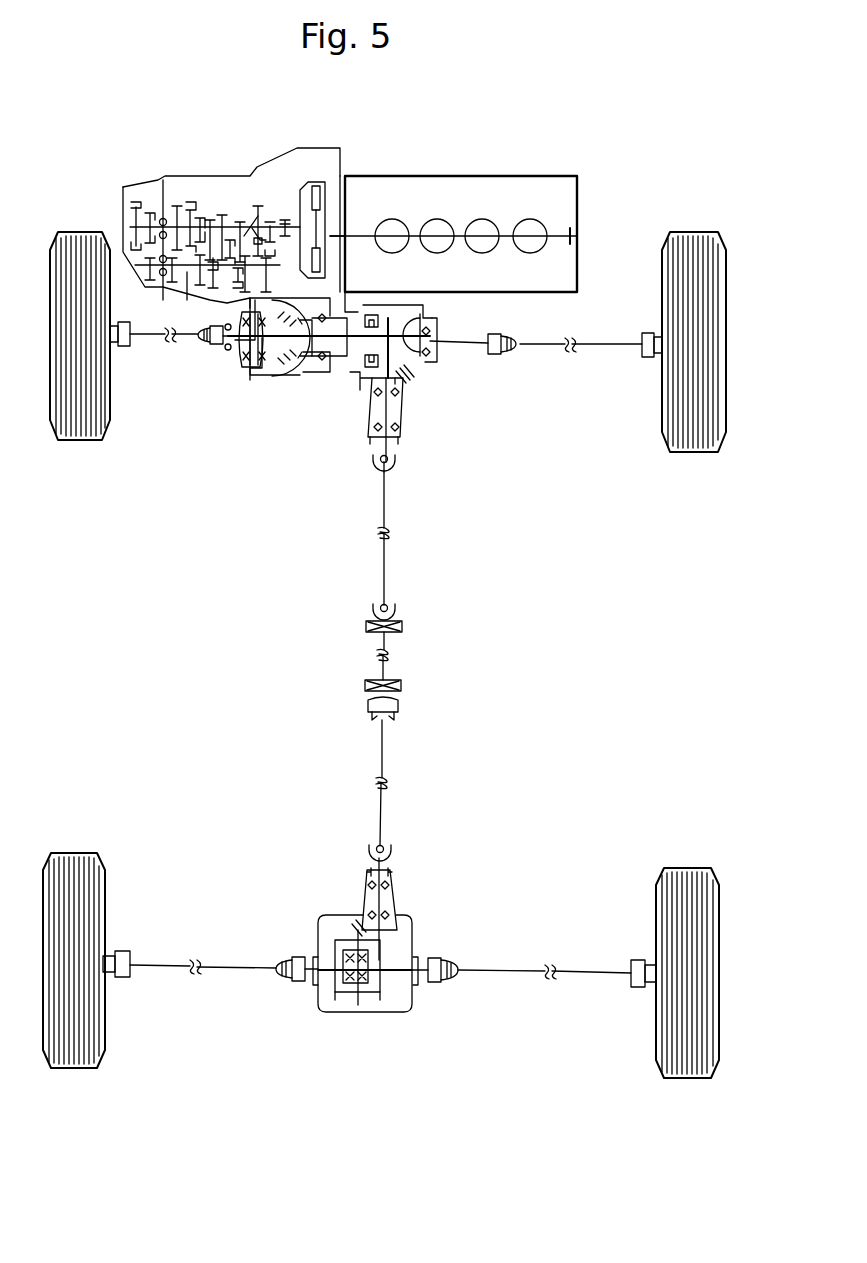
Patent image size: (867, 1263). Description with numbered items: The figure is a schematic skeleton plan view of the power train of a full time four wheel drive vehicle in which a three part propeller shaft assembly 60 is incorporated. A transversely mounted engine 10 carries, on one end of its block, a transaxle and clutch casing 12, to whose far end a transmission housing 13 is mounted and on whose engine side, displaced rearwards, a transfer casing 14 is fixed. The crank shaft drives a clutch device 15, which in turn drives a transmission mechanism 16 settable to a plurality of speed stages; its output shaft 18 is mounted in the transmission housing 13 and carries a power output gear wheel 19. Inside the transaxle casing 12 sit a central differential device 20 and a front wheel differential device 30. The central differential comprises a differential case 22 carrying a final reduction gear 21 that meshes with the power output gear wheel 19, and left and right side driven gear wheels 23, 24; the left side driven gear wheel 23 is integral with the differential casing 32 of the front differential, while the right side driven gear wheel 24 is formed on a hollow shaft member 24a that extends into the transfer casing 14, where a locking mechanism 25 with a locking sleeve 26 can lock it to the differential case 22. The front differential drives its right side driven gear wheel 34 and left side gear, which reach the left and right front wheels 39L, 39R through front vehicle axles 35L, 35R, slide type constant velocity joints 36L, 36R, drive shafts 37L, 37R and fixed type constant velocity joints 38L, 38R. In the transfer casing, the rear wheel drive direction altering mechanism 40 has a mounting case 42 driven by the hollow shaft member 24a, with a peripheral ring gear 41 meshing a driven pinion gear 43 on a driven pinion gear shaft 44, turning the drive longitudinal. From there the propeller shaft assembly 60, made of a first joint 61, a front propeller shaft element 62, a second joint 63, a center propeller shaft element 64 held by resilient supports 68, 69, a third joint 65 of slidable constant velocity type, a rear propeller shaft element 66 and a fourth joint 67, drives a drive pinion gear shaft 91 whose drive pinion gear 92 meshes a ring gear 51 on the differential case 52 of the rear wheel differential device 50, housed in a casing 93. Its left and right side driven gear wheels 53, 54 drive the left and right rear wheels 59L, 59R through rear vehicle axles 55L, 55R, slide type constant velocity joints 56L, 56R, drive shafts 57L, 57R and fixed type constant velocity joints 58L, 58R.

The engine 10 is at (498, 175).
The transaxle and clutch casing 12 is at (268, 170).
The transmission housing 13 is at (163, 180).
The transfer casing 14 is at (424, 305).
The clutch device 15 is at (318, 185).
The transmission mechanism 16 is at (205, 200).
The output shaft 18 is at (190, 272).
The power output gear wheel 19 is at (255, 236).
The central differential device 20 is at (308, 372).
The final reduction gear 21 is at (262, 400).
The differential case 22 is at (302, 380).
The left side driven gear wheel 23 is at (278, 356).
The right side driven gear wheel 24 is at (356, 372).
The hollow shaft member 24a is at (362, 300).
The locking mechanism 25 is at (370, 440).
The locking sleeve 26 is at (396, 305).
The front wheel differential device 30 is at (232, 372).
The differential casing 32 is at (230, 362).
The right side driven gear wheel 34 is at (268, 328).
The left side front vehicle axle 35L is at (232, 350).
The right side front vehicle axle 35R is at (460, 343).
The left side slide type constant velocity joint 36L is at (212, 346).
The right side slide type constant velocity joint 36R is at (490, 334).
The left side drive shaft 37L is at (137, 332).
The right side drive shaft 37R is at (605, 342).
The left side fixed type constant velocity joint 38L is at (124, 347).
The right side fixed type constant velocity joint 38R is at (647, 358).
The left front wheel 39L is at (80, 336).
The right front wheel 39R is at (694, 455).
The rear wheel drive direction altering mechanism 40 is at (406, 390).
The ring gear 41 is at (431, 331).
The mounting case 42 is at (414, 380).
The driven pinion gear 43 is at (400, 408).
The driven pinion gear shaft 44 is at (392, 452).
The rear wheel differential device 50 is at (318, 940).
The ring gear 51 is at (350, 918).
The differential case 52 is at (384, 1000).
The left side driven gear wheel 53 is at (356, 992).
The right side driven gear wheel 54 is at (385, 960).
The left side rear vehicle axle 55L is at (308, 978).
The right side rear vehicle axle 55R is at (420, 982).
The left side slide type constant velocity joint 56L is at (282, 958).
The right side slide type constant velocity joint 56R is at (448, 966).
The left side drive shaft 57L is at (230, 970).
The right side drive shaft 57R is at (522, 974).
The left side fixed type constant velocity joint 58L is at (124, 952).
The right side fixed type constant velocity joint 58R is at (638, 962).
The left rear wheel 59L is at (74, 854).
The right rear wheel 59R is at (692, 868).
The three part propeller shaft assembly 60 is at (420, 610).
The first joint 61 is at (380, 470).
The front propeller shaft element 62 is at (386, 562).
The second joint 63 is at (380, 606).
The center propeller shaft element 64 is at (376, 648).
The third joint 65 is at (352, 696).
The rear propeller shaft element 66 is at (386, 766).
The fourth joint 67 is at (375, 845).
The support 68 is at (404, 636).
The support 69 is at (400, 694).
The drive pinion gear shaft 91 is at (388, 862).
The drive pinion gear 92 is at (398, 926).
The casing 93 is at (320, 922).